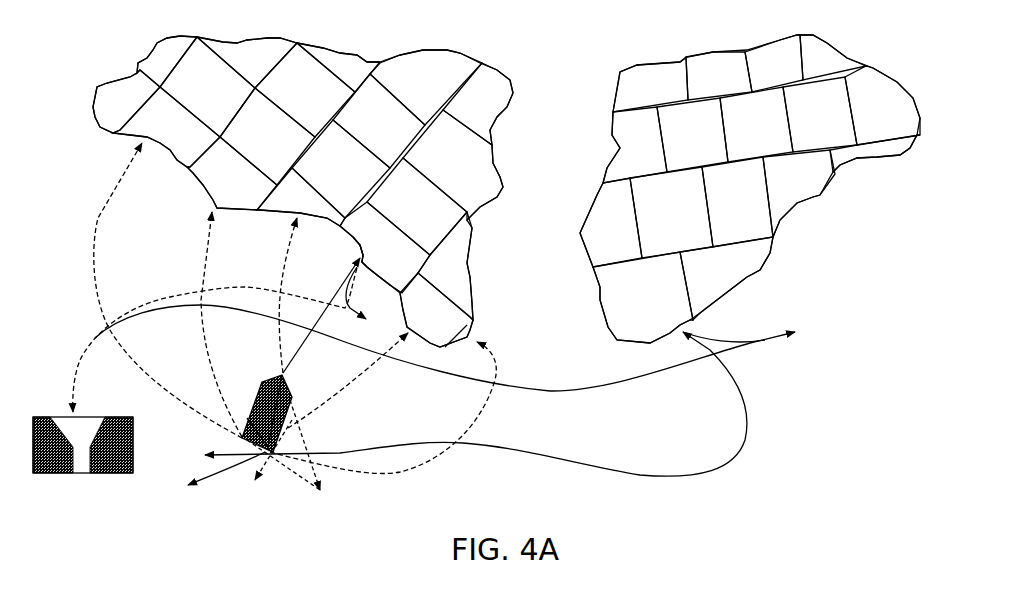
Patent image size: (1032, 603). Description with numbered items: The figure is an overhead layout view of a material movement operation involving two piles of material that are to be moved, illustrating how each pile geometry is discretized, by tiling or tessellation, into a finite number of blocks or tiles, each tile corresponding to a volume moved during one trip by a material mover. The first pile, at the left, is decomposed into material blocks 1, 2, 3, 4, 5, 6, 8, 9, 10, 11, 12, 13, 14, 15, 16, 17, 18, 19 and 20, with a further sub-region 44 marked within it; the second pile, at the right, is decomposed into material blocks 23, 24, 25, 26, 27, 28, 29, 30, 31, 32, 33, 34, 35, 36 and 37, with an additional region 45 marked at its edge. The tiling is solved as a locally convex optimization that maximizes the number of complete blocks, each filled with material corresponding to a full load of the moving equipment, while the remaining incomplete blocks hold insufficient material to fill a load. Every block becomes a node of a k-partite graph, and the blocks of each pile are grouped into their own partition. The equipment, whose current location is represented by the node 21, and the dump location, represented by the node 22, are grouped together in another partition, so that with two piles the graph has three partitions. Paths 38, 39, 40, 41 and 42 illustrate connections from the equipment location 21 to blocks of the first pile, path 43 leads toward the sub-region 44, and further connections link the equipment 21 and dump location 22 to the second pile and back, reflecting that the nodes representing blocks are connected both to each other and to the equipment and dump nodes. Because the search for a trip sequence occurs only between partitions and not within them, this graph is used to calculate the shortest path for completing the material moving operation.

The material block node 1 is at (126, 101).
The material block node 2 is at (166, 127).
The material block node 3 is at (232, 173).
The material block node 4 is at (301, 197).
The material block node 5 is at (385, 247).
The material block node 6 is at (436, 310).
The material block node 8 is at (445, 266).
The material block node 9 is at (417, 206).
The material block node 10 is at (341, 169).
The material block node 11 is at (267, 136).
The material block node 12 is at (207, 87).
The material block node 13 is at (167, 61).
The material block node 14 is at (247, 62).
The material block node 15 is at (305, 90).
The material block node 16 is at (379, 121).
The material block node 17 is at (453, 165).
The material block node 18 is at (338, 67).
The material block node 19 is at (426, 87).
The material block node 20 is at (478, 104).
The equipment location node 21 is at (274, 374).
The dump location node 22 is at (195, 370).
The map region cell 23 is at (643, 297).
The map region cell 24 is at (726, 278).
The map region cell 25 is at (611, 222).
The map region cell 26 is at (671, 212).
The map region cell 27 is at (737, 202).
The map region cell 28 is at (799, 193).
The map region cell 29 is at (635, 145).
The map region cell 30 is at (692, 135).
The map region cell 31 is at (756, 124).
The map region cell 32 is at (820, 114).
The map region cell 33 is at (882, 105).
The map region cell 34 is at (650, 84).
The map region cell 35 is at (719, 76).
The map region cell 36 is at (774, 63).
The map region cell 37 is at (833, 57).
The data transfer path 38 is at (168, 290).
The data transfer path 39 is at (221, 324).
The data transfer path 40 is at (290, 295).
The data transfer path 41 is at (348, 380).
The data transfer path 42 is at (383, 408).
The data transfer path 43 is at (346, 296).
The map sub-region 44 is at (377, 261).
The map region cell 45 is at (875, 153).